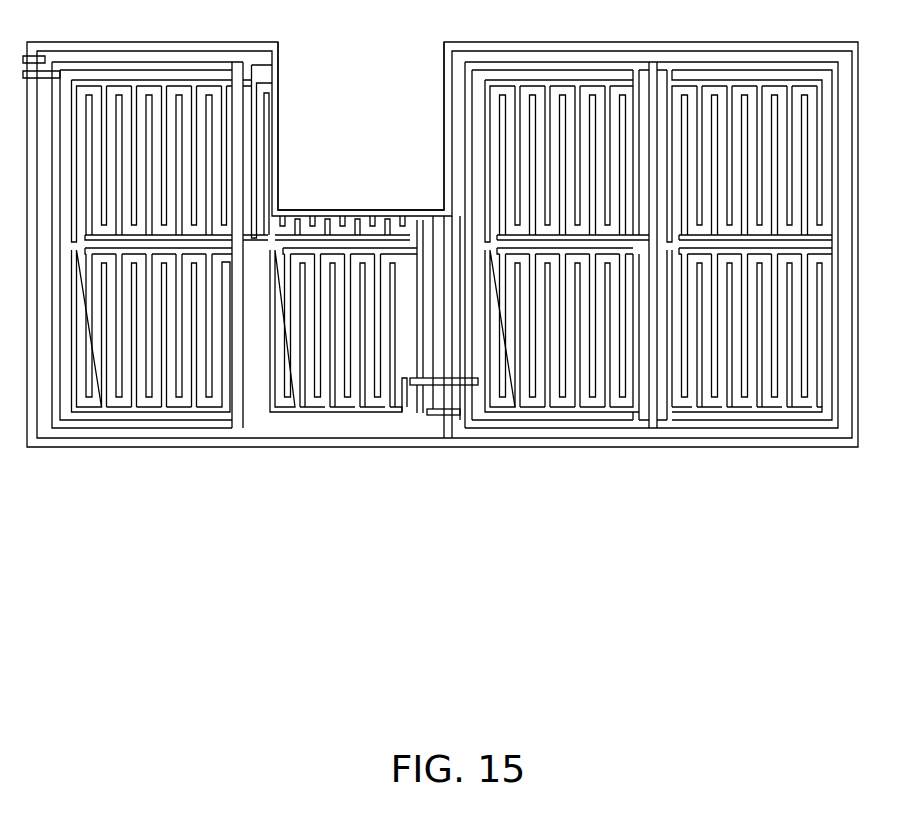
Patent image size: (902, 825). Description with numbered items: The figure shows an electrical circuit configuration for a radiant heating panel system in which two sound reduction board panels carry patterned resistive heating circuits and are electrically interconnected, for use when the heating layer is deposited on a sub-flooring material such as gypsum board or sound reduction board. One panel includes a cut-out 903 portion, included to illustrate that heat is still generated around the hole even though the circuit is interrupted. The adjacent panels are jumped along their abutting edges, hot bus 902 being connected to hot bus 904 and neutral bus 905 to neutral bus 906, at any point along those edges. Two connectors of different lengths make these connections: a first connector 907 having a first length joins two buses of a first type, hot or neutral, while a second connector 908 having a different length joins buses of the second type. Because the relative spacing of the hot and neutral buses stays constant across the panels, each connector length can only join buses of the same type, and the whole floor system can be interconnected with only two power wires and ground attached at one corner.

The hot bus 902 is at (413, 434).
The cut-out portion 903 is at (361, 126).
The hot bus 904 is at (468, 434).
The neutral bus 905 is at (414, 408).
The neutral bus 906 is at (470, 408).
The first connector 907 is at (440, 416).
The second connector 908 is at (410, 382).